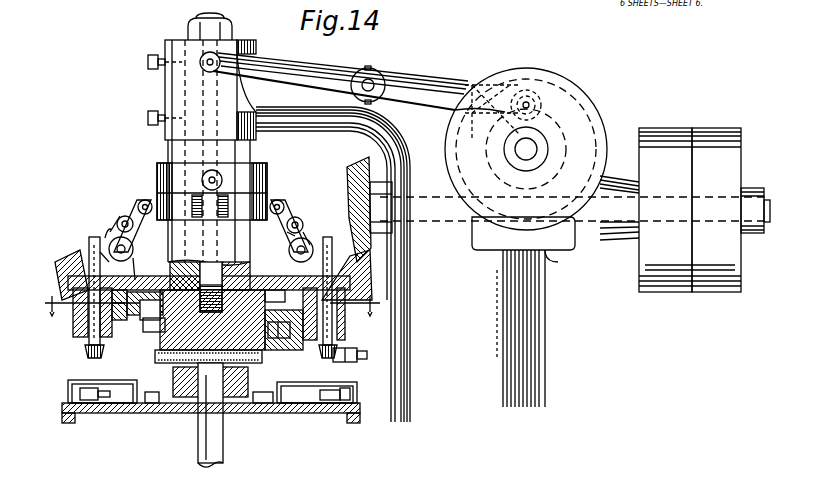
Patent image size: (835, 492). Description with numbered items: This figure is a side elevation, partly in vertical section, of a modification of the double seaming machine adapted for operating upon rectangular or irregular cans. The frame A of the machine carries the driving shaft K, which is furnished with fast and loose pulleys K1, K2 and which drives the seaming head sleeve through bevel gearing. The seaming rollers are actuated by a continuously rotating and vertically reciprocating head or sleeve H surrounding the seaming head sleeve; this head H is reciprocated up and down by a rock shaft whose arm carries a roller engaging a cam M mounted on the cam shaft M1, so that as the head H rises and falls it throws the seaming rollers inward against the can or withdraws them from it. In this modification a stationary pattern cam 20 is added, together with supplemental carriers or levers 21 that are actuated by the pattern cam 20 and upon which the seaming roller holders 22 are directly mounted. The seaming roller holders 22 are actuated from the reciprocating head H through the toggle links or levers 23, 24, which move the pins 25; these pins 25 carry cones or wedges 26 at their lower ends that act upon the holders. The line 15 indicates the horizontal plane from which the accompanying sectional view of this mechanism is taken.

The section line 15— 15 is at (211, 306).
The stationary pattern cam 20 is at (143, 318).
The supplemental carriers or levers 21 is at (156, 334).
The seaming roller holders 22 is at (352, 363).
The toggle links or levers 23 is at (128, 200).
The toggle links or levers 24 is at (118, 228).
The pins 25 is at (93, 237).
The cones or wedges 26 is at (85, 350).
The reciprocating head or sleeve H is at (262, 168).
The cam M is at (532, 72).
The cam shaft M1 is at (526, 149).
The driving shaft K is at (768, 200).
The fast pulley K1 is at (655, 128).
The loose pulley K2 is at (720, 128).
The frame A is at (506, 328).